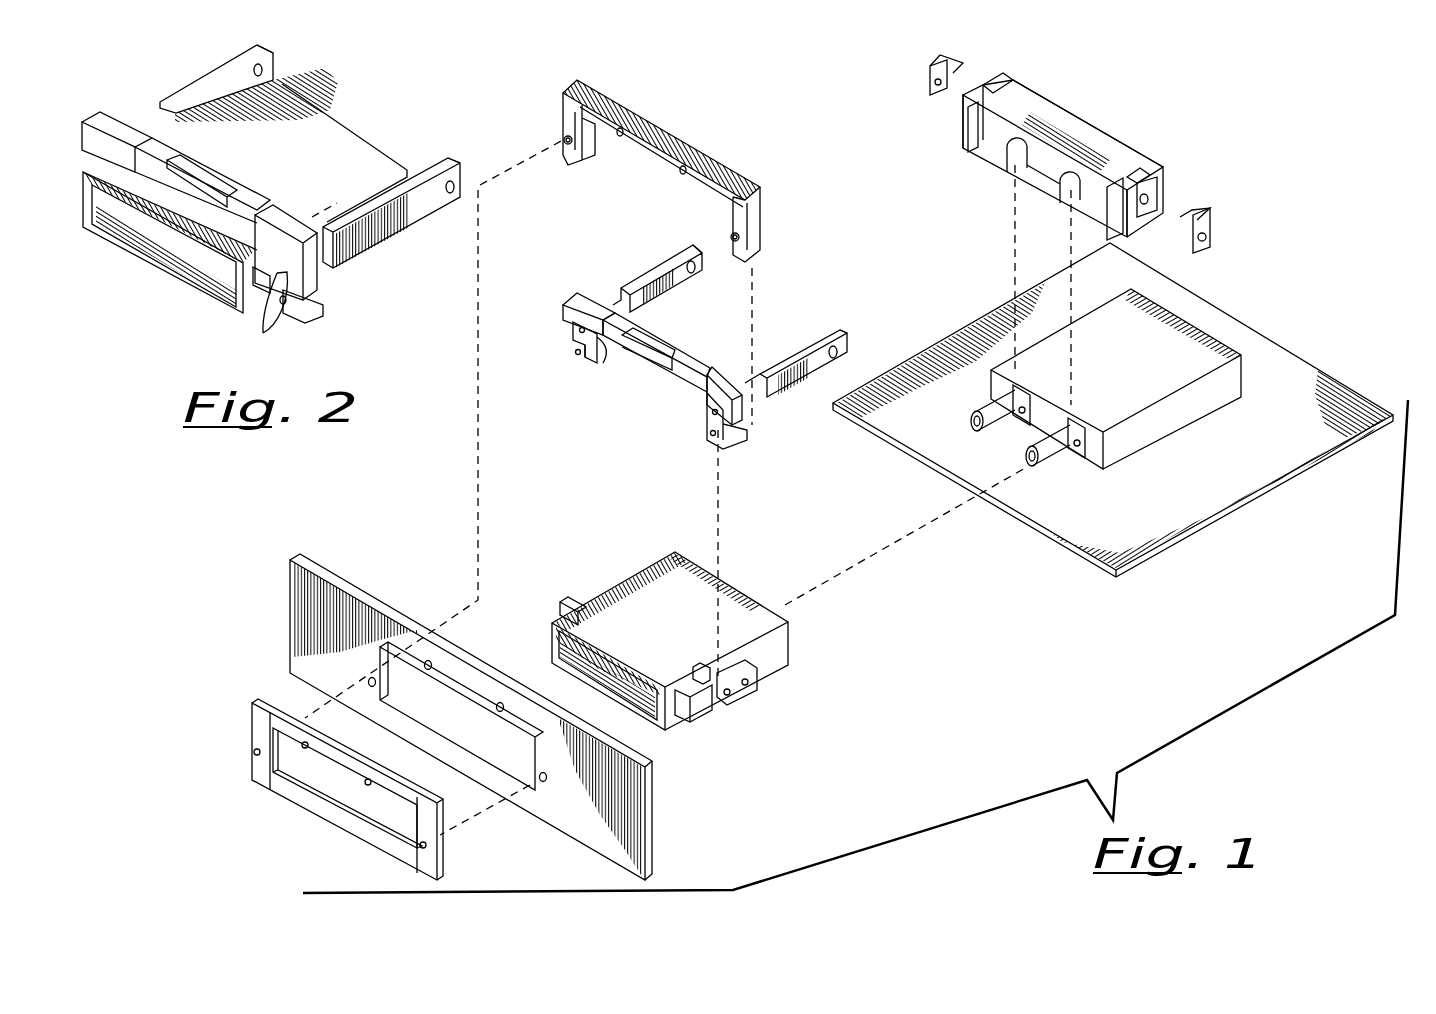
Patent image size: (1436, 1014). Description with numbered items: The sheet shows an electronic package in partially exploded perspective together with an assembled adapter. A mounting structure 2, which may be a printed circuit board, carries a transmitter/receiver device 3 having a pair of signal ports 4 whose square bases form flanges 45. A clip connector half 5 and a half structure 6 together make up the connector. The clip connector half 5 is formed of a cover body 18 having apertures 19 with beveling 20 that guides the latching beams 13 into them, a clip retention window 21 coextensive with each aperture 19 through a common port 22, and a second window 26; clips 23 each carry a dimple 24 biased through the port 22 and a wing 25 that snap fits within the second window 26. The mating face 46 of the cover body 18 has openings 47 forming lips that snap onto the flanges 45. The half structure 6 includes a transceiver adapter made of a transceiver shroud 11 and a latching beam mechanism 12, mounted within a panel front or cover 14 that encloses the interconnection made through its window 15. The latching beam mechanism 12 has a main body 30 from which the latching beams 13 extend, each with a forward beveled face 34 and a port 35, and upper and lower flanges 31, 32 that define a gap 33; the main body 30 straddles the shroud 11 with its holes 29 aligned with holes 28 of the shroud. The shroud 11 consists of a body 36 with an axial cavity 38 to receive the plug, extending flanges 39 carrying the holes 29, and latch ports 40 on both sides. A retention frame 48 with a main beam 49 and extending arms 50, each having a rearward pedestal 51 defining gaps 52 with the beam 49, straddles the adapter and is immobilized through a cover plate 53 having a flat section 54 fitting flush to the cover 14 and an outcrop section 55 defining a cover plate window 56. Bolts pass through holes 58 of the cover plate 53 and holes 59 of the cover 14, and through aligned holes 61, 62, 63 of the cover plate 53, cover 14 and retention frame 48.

In FIG. 1, the mounting structure 2 is at (1273, 363).
In FIG. 1, the transmitter/receiver device 3 is at (1094, 379).
In FIG. 1, the signal ports 4 is at (1030, 456).
In FIG. 1, the clip connector half 5 is at (1072, 235).
In FIG. 2, the half structure 6 is at (289, 201).
In FIG. 1, the transceiver shroud 11 is at (699, 649).
In FIG. 1, the latching beam mechanism 12 is at (699, 448).
In FIG. 2, the latching beams 13 is at (329, 152).
In FIG. 1, the latching beams 13 is at (747, 307).
In FIG. 1, the panel front or cover 14 is at (423, 717).
In FIG. 1, the window 15 is at (487, 740).
In FIG. 1, the cover body 18 is at (1130, 172).
In FIG. 1, the apertures 19 is at (967, 147).
In FIG. 1, the beveling 20 is at (965, 123).
In FIG. 1, the clip retention window 21 is at (1148, 192).
In FIG. 1, the port 22 is at (1152, 200).
In FIG. 1, the clips 23 is at (1080, 165).
In FIG. 1, the dimple 24 is at (940, 92).
In FIG. 1, the wing 25 is at (950, 62).
In FIG. 1, the second window 26 is at (1005, 77).
In FIG. 1, the holes 28 is at (712, 707).
In FIG. 2, the holes 29 is at (268, 300).
In FIG. 1, the holes 29 is at (600, 352).
In FIG. 1, the main body 30 is at (655, 337).
In FIG. 1, the upper flange 31 is at (563, 307).
In FIG. 1, the lower flange 32 is at (568, 352).
In FIG. 2, the gap 33 is at (302, 288).
In FIG. 1, the gap 33 is at (573, 333).
In FIG. 2, the forward beveled face 34 is at (273, 55).
In FIG. 1, the forward beveled face 34 is at (703, 250).
In FIG. 2, the port 35 is at (262, 72).
In FIG. 1, the port 35 is at (684, 265).
In FIG. 1, the body 36 is at (737, 588).
In FIG. 2, the axial cavity 38 is at (167, 261).
In FIG. 1, the axial cavity 38 is at (607, 697).
In FIG. 1, the extending flanges 39 is at (578, 600).
In FIG. 2, the latch ports 40 is at (108, 200).
In FIG. 1, the latch ports 40 is at (567, 647).
In FIG. 1, the flanges 45 is at (1030, 410).
In FIG. 1, the mating face 46 is at (1037, 183).
In FIG. 1, the openings 47 is at (1013, 147).
In FIG. 1, the retention frame 48 is at (669, 158).
In FIG. 1, the main beam 49 is at (640, 115).
In FIG. 1, the extending arms 50 is at (669, 158).
In FIG. 1, the pedestals 51 is at (566, 140).
In FIG. 1, the gaps 52 is at (592, 132).
In FIG. 1, the cover plate 53 is at (330, 783).
In FIG. 1, the flat section 54 is at (257, 703).
In FIG. 1, the outcrop section 55 is at (407, 865).
In FIG. 1, the cover plate window 56 is at (343, 817).
In FIG. 1, the holes 58 is at (368, 783).
In FIG. 1, the holes 59 is at (428, 663).
In FIG. 1, the holes 61 is at (247, 730).
In FIG. 1, the holes 62 is at (457, 735).
In FIG. 1, the holes 63 is at (567, 145).